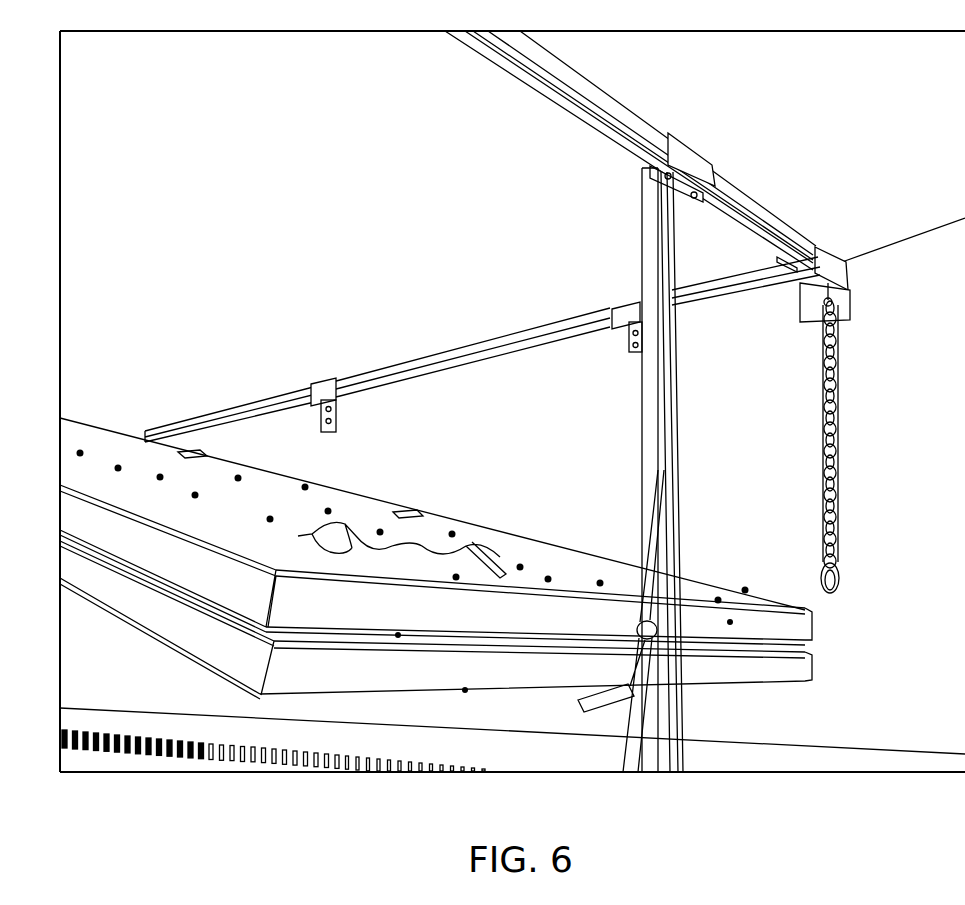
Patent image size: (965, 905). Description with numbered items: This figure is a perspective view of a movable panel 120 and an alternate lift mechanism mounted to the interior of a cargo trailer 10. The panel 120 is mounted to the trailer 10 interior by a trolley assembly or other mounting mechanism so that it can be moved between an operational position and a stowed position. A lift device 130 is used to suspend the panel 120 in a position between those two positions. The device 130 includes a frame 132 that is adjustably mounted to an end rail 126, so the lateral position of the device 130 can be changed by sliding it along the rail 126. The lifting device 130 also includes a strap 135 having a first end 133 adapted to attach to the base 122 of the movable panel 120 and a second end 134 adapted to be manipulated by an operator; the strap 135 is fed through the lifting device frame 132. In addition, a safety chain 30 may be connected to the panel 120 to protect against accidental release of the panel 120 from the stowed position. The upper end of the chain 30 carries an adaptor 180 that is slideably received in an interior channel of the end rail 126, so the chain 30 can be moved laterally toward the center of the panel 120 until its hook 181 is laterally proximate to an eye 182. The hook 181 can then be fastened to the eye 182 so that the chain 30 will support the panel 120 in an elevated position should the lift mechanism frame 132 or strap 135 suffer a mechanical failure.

The cargo trailer 10 is at (192, 128).
The rail 126 is at (603, 102).
The lift device 130 is at (720, 146).
The frame 132 is at (640, 172).
The adaptor 180 is at (850, 292).
The safety chain 30 is at (838, 432).
The hook 181 is at (839, 580).
The first end of strap 133 is at (645, 470).
The second end of strap 134 is at (681, 543).
The strap 135 is at (694, 430).
The eye 182 is at (613, 707).
The movable panel 120 is at (190, 632).
The base of movable panel 122 is at (347, 677).